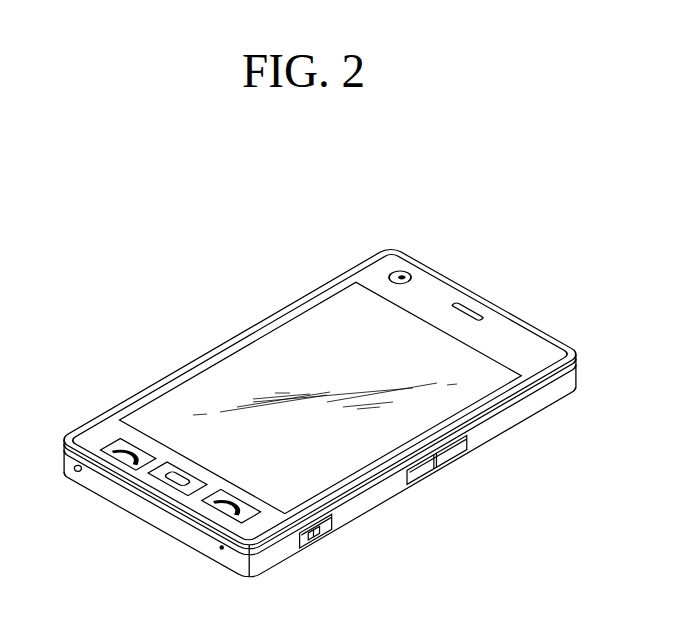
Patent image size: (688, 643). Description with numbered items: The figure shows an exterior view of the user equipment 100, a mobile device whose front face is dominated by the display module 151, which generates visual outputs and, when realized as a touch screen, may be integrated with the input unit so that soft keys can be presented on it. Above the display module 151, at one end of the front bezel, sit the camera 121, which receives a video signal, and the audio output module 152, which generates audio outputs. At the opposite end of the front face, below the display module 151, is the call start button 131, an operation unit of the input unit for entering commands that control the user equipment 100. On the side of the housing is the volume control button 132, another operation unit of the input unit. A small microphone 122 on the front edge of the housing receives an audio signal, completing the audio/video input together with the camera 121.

The user equipment 100 is at (228, 296).
The camera 121 is at (404, 272).
The microphone 122 is at (222, 549).
The call start button 131 is at (107, 445).
The volume control button 132 is at (426, 465).
The display module 151 is at (212, 382).
The audio output module 152 is at (470, 304).